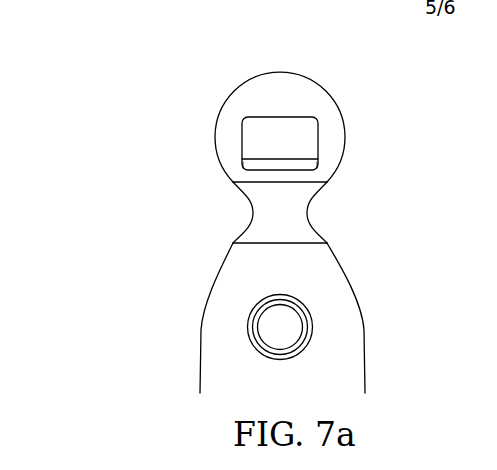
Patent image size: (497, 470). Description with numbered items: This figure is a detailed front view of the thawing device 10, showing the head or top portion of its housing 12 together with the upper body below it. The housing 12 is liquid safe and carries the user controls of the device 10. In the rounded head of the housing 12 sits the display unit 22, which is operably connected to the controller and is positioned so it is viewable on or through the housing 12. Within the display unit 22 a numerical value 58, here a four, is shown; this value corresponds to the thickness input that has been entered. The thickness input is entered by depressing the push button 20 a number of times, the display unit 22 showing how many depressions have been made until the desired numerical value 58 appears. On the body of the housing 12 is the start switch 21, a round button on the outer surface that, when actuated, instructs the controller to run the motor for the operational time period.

The device 10 is at (108, 140).
The housing 12 is at (345, 273).
The push button 20 is at (310, 161).
The start switch 21 is at (280, 325).
The display unit 22 is at (250, 125).
The numerical value 58 is at (290, 127).